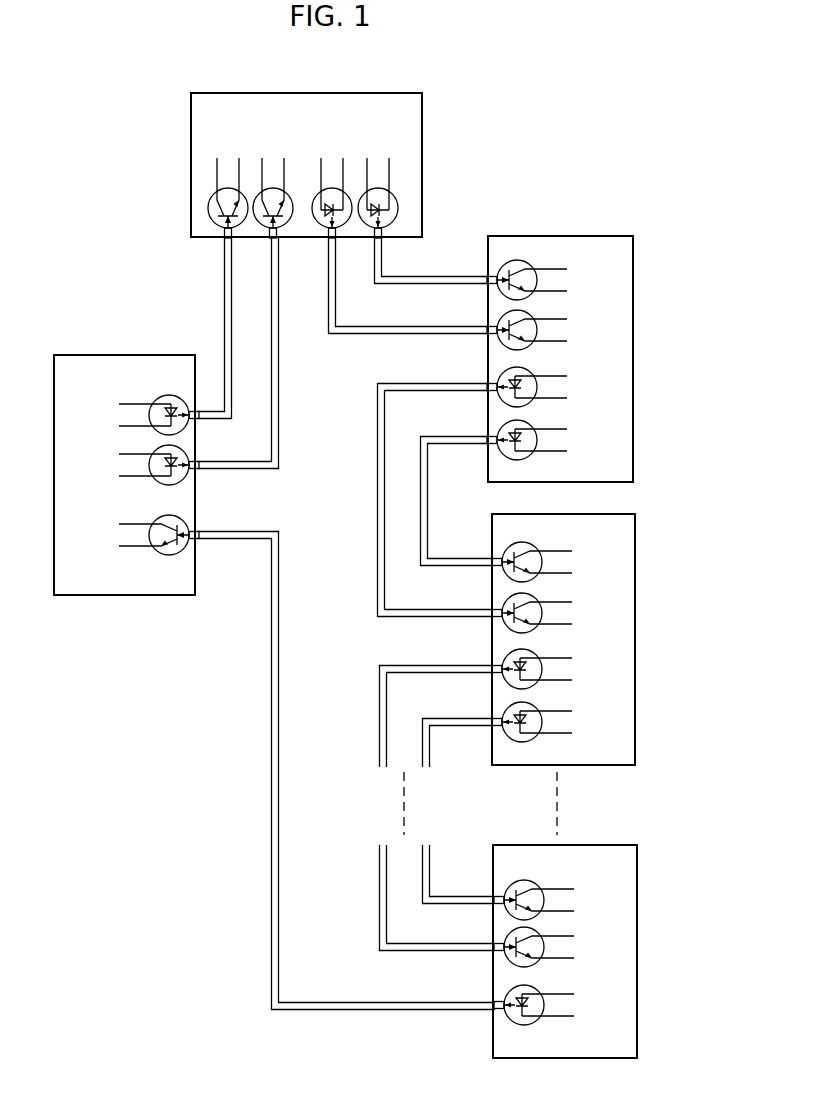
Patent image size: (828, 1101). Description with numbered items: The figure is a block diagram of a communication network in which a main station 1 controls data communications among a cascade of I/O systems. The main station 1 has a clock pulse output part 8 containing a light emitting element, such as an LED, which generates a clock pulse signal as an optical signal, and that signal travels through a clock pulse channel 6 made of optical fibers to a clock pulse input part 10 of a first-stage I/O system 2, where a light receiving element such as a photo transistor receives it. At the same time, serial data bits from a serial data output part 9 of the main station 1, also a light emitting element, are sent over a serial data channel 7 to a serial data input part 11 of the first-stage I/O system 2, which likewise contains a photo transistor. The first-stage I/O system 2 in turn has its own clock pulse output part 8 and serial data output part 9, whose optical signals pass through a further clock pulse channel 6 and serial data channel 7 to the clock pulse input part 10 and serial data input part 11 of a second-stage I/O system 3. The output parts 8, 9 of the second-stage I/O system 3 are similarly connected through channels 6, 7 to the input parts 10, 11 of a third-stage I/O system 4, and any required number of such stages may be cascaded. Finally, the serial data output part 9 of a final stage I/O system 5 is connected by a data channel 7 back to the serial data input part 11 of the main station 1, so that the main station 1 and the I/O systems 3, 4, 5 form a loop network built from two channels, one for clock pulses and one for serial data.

The main station 1 is at (135, 355).
The first-stage I/O system 2 is at (422, 158).
The second-stage I/O system 3 is at (633, 287).
The third-stage I/O system 4 is at (635, 542).
The final stage I/O system 5 is at (637, 865).
The clock pulse channel 6 is at (224, 285).
The serial data channel 7 is at (271, 282).
The clock pulse output part 8 is at (329, 187).
The serial data output part 9 is at (375, 187).
The clock pulse input part 10 is at (225, 187).
The serial data input part 11 is at (272, 187).